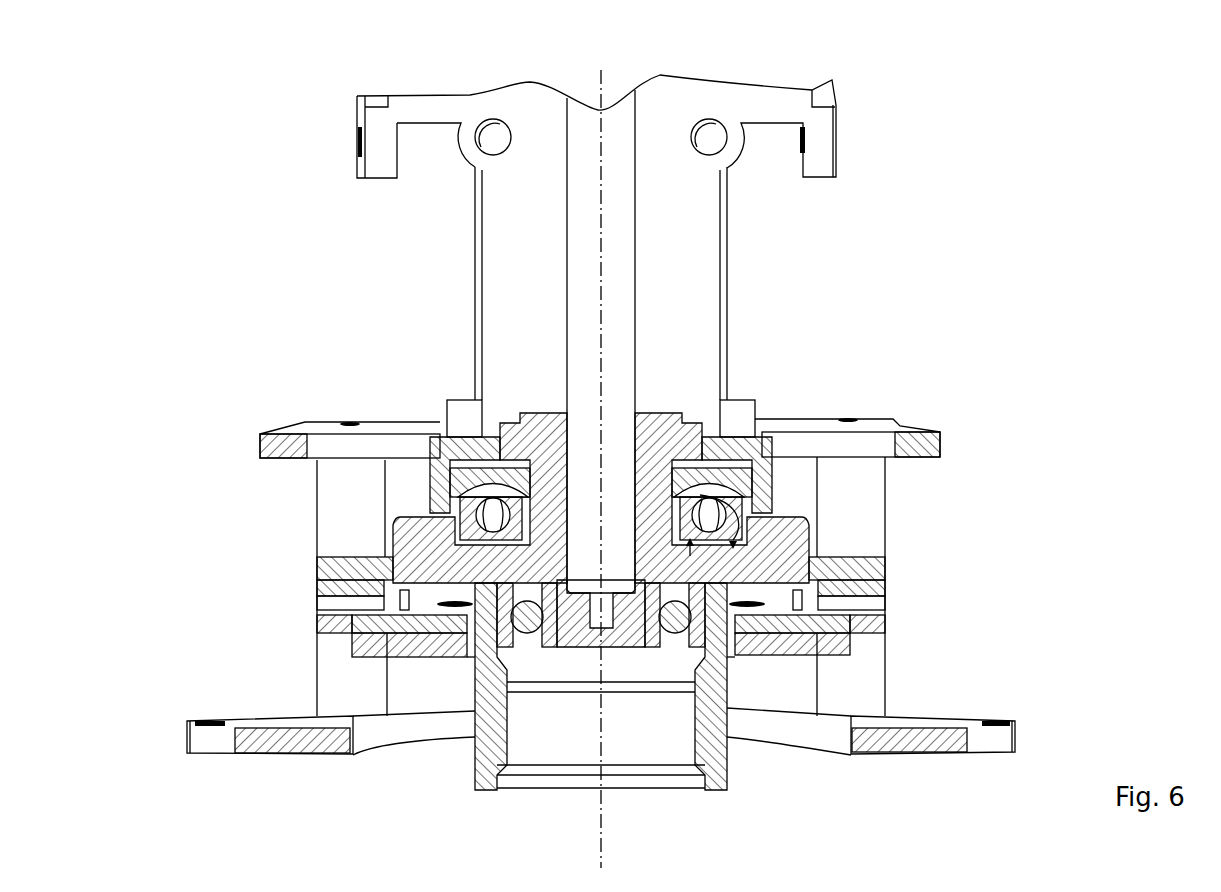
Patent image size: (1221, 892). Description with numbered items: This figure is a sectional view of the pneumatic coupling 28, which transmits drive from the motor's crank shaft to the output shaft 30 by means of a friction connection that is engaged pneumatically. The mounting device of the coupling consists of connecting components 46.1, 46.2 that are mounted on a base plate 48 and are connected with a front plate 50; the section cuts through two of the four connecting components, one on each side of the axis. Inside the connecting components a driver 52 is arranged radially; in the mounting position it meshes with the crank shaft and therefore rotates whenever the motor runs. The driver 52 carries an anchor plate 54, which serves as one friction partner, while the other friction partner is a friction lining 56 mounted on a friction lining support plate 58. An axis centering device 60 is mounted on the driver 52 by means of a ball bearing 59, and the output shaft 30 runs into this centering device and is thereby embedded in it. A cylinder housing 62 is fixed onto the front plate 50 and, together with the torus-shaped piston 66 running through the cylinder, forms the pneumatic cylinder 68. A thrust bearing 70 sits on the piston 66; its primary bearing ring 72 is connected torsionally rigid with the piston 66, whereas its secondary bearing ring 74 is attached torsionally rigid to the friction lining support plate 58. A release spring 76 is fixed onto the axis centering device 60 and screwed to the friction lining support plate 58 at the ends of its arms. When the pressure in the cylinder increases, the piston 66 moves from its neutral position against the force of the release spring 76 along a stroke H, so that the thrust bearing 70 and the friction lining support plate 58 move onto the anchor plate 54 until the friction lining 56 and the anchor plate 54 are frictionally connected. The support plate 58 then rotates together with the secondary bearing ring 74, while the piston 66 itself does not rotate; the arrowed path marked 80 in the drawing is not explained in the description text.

The pneumatic coupling 28 is at (1095, 106).
The output shaft 30 is at (620, 285).
The connecting component 46.1 is at (870, 510).
The connecting component 46.2 is at (350, 518).
The base plate 48 is at (922, 750).
The front plate 50 is at (900, 430).
The driver 52 is at (732, 777).
The anchor plate 54 is at (877, 625).
The friction lining 56 is at (885, 585).
The friction lining support plate 58 is at (878, 568).
The ball bearing 59 is at (545, 640).
The axis centering device 60 is at (653, 507).
The cylinder housing 62 is at (767, 478).
The piston 66 is at (762, 458).
The pneumatic cylinder 68 is at (416, 486).
The thrust bearing 70 is at (448, 507).
The primary bearing ring 72 is at (500, 505).
The secondary bearing ring 74 is at (470, 535).
The release spring 76 is at (533, 533).
The force flow 80 is at (713, 478).
The stroke H is at (648, 555).